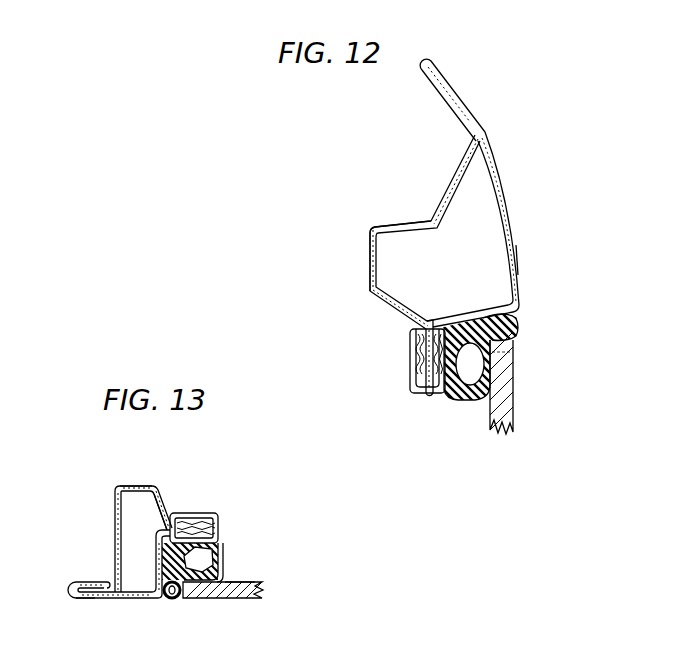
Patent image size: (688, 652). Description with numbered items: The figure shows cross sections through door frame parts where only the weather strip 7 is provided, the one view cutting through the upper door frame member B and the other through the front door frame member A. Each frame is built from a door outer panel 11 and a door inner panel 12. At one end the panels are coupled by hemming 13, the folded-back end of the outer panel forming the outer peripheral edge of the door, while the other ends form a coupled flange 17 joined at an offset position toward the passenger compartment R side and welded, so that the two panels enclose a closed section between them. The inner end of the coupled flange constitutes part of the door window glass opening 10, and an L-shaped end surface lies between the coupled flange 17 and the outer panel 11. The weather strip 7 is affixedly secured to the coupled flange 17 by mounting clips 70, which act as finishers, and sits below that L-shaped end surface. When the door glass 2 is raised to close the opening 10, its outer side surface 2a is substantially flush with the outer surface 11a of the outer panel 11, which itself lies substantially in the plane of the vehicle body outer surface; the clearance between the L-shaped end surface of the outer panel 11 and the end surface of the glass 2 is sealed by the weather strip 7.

In FIG. 12, the door glass 2 is at (503, 404).
In FIG. 13, the door glass 2 is at (210, 600).
In FIG. 12, the outer side surface of the door glass 2a is at (510, 376).
In FIG. 13, the outer side surface of the door glass 2a is at (233, 601).
In FIG. 12, the weather strip 7 is at (521, 322).
In FIG. 13, the weather strip 7 is at (173, 601).
In FIG. 12, the door window glass opening 10 is at (426, 407).
In FIG. 13, the door window glass opening 10 is at (228, 530).
In FIG. 12, the door outer panel 11 is at (504, 189).
In FIG. 13, the door outer panel 11 is at (128, 600).
In FIG. 12, the outer surface of the outer panel 11a is at (517, 252).
In FIG. 13, the outer surface of the outer panel 11a is at (86, 601).
In FIG. 12, the door inner panel 12 is at (417, 221).
In FIG. 13, the door inner panel 12 is at (115, 503).
In FIG. 12, the hemming 13 is at (443, 66).
In FIG. 13, the hemming 13 is at (80, 575).
In FIG. 12, the coupled flange 17 is at (431, 310).
In FIG. 13, the coupled flange 17 is at (148, 525).
In FIG. 12, the mounting clips 70 is at (412, 366).
In FIG. 13, the mounting clips 70 is at (191, 515).
In FIG. 13, the front door frame member A is at (125, 476).
In FIG. 12, the upper door frame member B is at (386, 204).
In FIG. 12, the passenger compartment R is at (464, 440).
In FIG. 13, the passenger compartment R is at (268, 544).